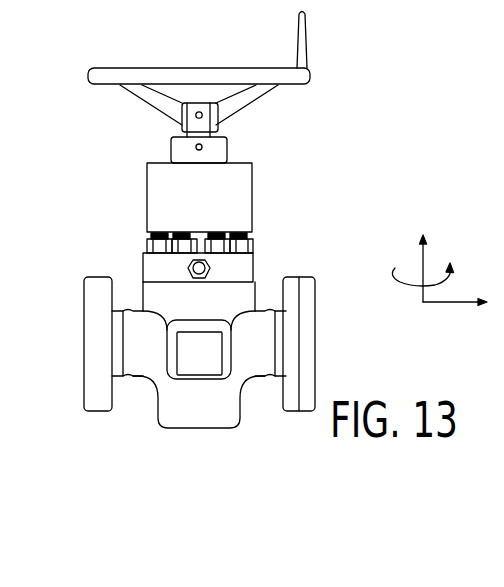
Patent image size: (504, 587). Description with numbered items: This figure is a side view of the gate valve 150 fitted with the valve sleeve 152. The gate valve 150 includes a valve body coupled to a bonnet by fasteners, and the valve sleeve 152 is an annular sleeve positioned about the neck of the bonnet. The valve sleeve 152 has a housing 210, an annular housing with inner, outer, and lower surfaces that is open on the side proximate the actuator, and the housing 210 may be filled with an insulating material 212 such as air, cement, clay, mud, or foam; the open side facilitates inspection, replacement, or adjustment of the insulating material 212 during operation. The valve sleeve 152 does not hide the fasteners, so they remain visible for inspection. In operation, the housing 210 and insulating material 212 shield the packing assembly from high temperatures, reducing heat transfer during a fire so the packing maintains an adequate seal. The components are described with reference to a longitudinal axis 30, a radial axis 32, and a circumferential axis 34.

The gate valve 150 is at (367, 86).
The insulating material 212 is at (249, 153).
The housing 210 is at (242, 187).
The valve sleeve 152 is at (262, 206).
The longitudinal axis 30 is at (422, 262).
The radial axis 32 is at (447, 305).
The circumferential axis 34 is at (410, 287).